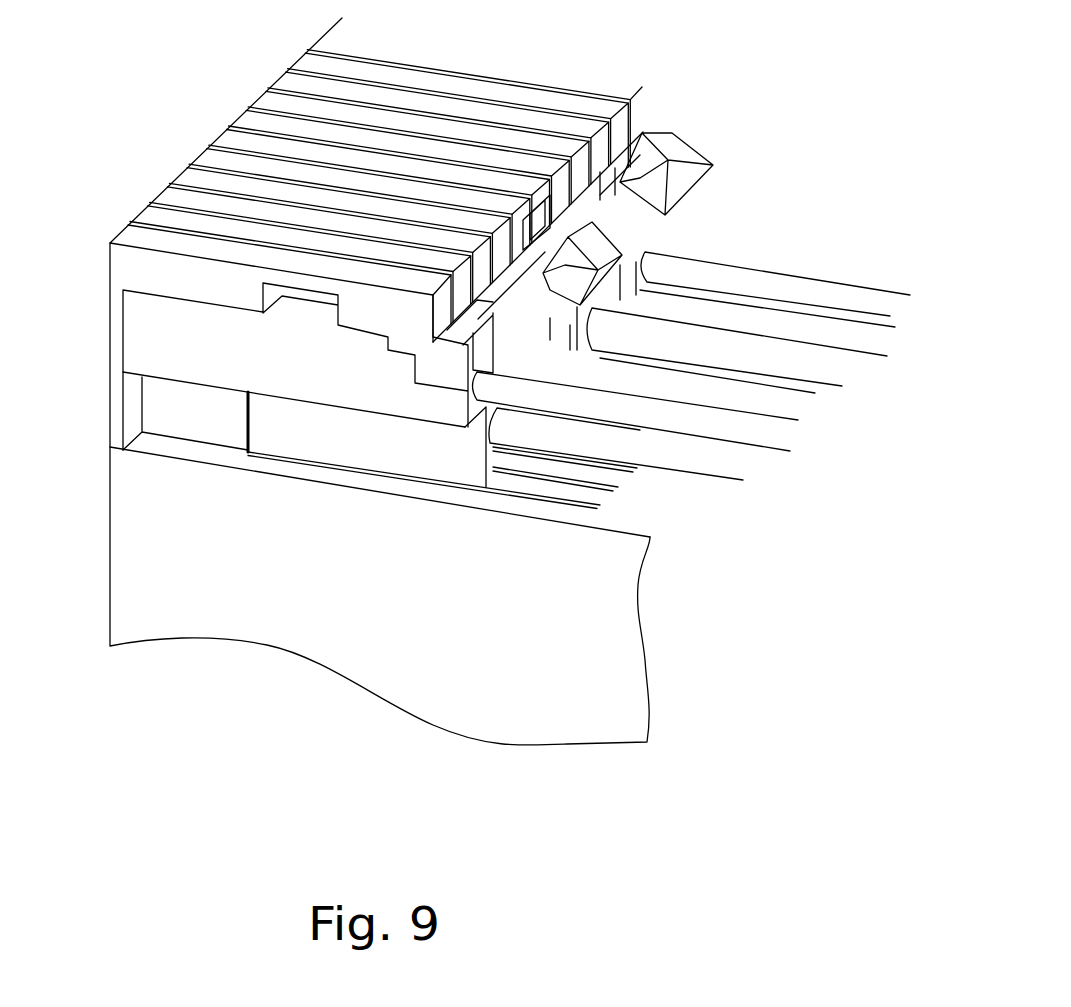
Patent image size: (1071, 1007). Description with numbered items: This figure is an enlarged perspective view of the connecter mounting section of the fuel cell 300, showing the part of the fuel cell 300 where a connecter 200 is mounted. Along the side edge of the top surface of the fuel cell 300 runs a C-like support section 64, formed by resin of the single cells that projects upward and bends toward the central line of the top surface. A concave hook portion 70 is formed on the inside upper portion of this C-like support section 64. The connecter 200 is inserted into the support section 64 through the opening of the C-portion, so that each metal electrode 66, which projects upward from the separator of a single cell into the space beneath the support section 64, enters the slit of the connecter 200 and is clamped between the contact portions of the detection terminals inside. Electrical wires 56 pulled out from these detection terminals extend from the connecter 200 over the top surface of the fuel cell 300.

The support section 64 is at (323, 133).
The concave hook portion 70 is at (287, 305).
The metal electrode 66 is at (157, 397).
The connecter 200 is at (317, 432).
The fuel cell 300 is at (585, 711).
The electrical wire 56 is at (793, 281).